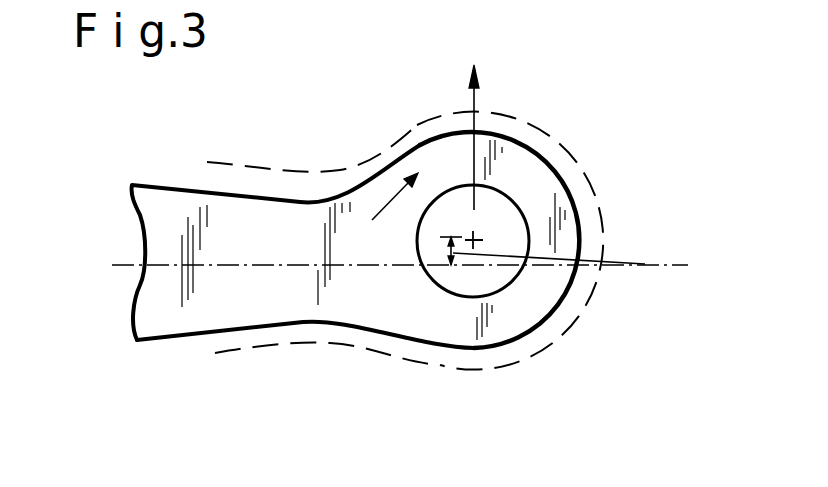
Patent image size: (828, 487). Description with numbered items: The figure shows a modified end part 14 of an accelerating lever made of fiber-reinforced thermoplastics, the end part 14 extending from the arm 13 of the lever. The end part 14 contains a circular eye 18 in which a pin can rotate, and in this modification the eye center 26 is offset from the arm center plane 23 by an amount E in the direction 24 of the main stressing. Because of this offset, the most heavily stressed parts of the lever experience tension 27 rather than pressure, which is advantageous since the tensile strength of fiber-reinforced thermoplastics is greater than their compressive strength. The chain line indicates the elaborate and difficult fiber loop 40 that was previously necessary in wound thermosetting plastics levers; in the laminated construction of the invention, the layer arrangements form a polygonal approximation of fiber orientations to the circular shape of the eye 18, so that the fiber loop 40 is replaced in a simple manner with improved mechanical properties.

The arm 13 is at (157, 342).
The end part 14 is at (527, 340).
The eye 18 is at (494, 202).
The arm center plane 23 is at (123, 266).
The direction of the main stressing 24 is at (483, 85).
The eye center 26 is at (478, 239).
The tension 27 is at (395, 197).
The fiber loop 40 is at (327, 342).